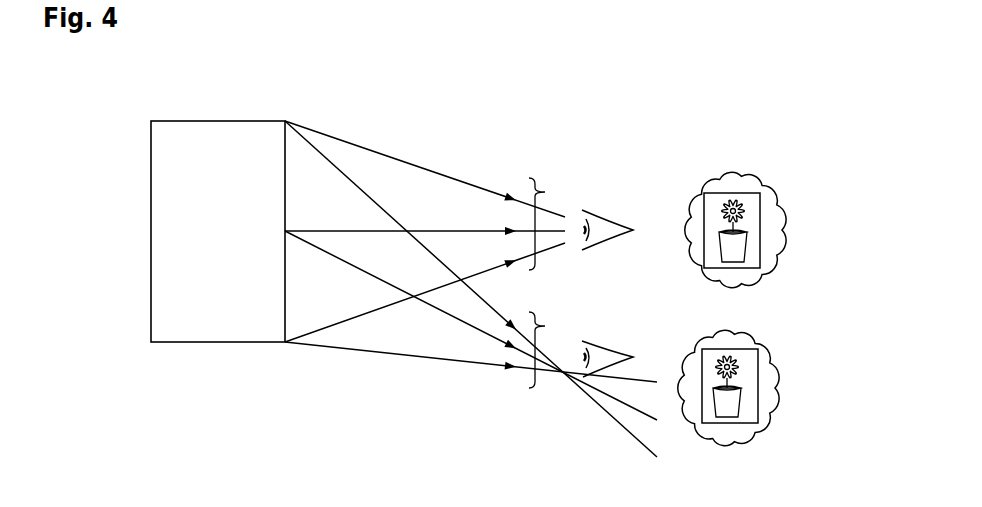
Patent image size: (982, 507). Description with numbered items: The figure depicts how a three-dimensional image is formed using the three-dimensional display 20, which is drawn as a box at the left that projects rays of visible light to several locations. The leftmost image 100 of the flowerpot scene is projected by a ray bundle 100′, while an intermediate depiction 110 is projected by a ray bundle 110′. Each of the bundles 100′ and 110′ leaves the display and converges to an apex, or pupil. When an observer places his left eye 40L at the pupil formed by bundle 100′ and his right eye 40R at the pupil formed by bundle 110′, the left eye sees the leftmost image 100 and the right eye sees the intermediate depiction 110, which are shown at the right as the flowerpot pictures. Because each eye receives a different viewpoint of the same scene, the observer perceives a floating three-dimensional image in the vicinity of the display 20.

The 3D display 20 is at (230, 343).
The ray bundle 110′ is at (558, 220).
The ray bundle 100′ is at (558, 347).
The right eye 40R is at (605, 222).
The left eye 40L is at (604, 350).
The intermediate depiction 110 is at (760, 209).
The leftmost image 100 is at (758, 364).